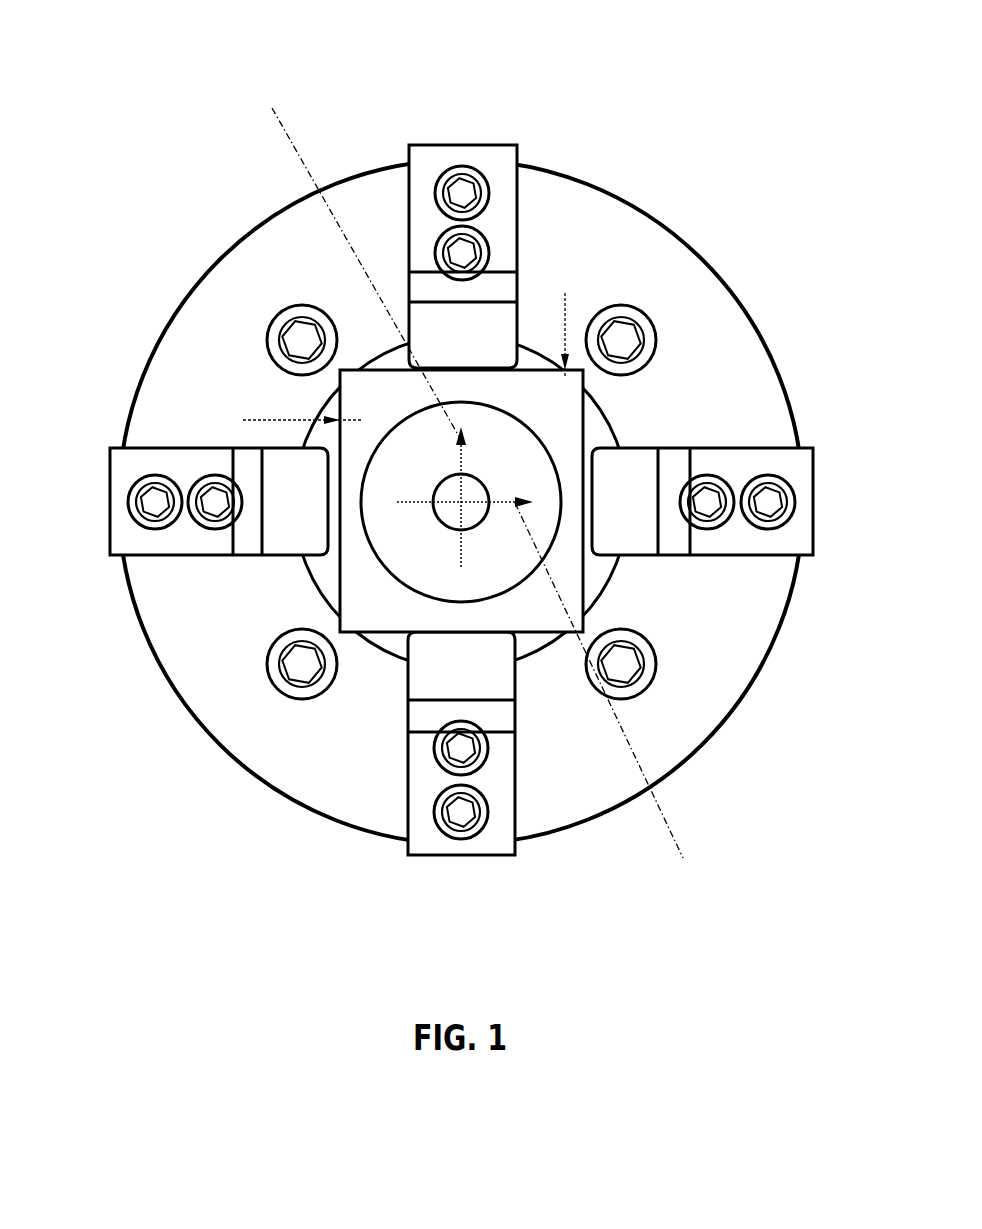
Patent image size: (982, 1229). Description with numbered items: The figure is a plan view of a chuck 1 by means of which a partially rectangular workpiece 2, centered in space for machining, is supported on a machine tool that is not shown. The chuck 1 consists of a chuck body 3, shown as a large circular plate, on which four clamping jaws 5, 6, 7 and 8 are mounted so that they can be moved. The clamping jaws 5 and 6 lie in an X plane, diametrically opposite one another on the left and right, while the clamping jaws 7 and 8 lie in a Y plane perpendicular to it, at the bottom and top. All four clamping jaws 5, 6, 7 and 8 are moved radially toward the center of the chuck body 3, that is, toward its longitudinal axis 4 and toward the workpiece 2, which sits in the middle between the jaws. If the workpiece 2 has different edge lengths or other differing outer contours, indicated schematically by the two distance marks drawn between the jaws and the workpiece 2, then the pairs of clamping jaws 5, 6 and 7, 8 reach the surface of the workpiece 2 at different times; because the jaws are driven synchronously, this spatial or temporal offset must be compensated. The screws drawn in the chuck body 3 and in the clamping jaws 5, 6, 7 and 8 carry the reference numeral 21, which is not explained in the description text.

The chuck 1 is at (464, 473).
The workpiece 2 is at (565, 422).
The chuck body 3 is at (200, 263).
The longitudinal axis 4 is at (461, 505).
The clamping jaw 5 is at (128, 538).
The clamping jaw 6 is at (793, 468).
The clamping jaw 7 is at (430, 837).
The clamping jaw 8 is at (433, 167).
The fastening screw 21 is at (307, 330).